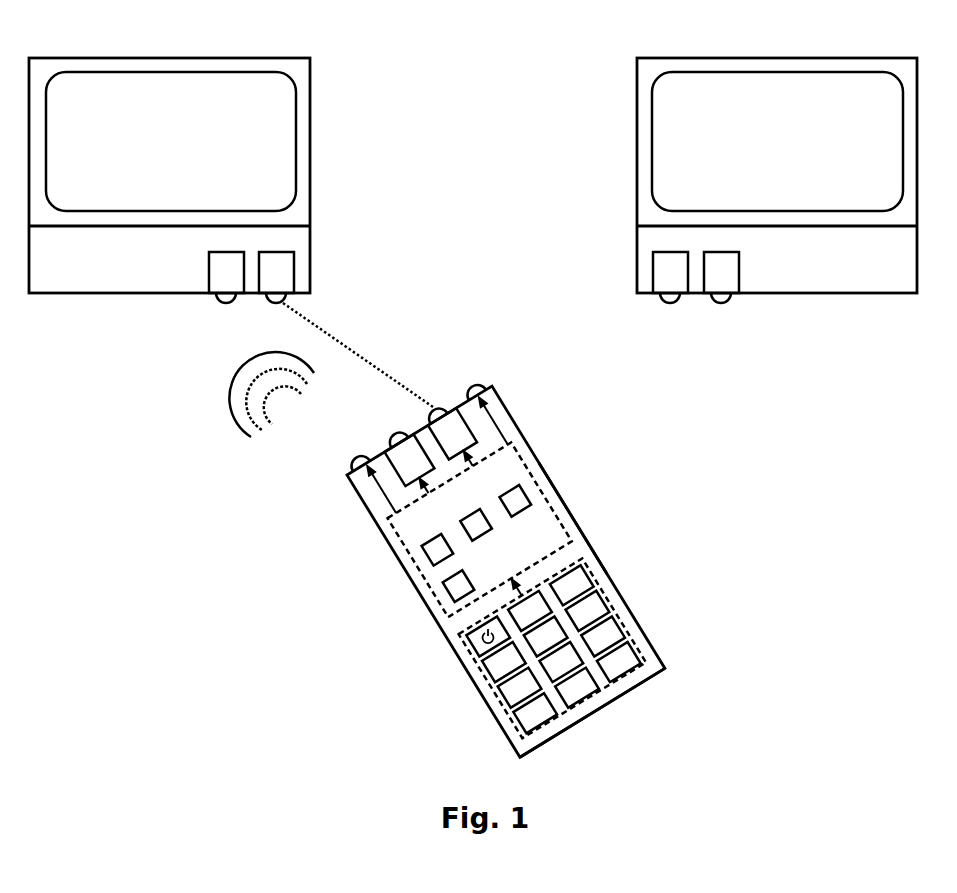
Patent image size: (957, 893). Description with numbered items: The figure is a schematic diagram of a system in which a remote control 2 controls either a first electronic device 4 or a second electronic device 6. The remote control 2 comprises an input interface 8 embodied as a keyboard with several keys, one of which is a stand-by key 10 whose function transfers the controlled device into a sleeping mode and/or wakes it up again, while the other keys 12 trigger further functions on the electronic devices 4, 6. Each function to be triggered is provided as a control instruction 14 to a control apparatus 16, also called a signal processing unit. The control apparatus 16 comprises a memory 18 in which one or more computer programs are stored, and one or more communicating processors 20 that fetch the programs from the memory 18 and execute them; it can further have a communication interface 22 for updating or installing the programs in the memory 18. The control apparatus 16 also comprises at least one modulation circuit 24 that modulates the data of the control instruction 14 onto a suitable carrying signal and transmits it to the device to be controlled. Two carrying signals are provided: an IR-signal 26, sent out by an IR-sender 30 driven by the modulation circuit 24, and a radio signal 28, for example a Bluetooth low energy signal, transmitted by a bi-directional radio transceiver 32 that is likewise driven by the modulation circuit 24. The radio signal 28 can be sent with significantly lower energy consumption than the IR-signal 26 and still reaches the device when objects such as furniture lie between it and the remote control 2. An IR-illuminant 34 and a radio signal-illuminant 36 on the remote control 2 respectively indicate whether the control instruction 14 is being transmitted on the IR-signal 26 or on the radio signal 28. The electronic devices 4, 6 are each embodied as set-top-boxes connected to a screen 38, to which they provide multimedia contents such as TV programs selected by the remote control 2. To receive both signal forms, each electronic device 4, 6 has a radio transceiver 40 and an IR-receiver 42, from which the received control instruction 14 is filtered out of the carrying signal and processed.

The remote control 2 is at (509, 403).
The first electronic device 4 is at (57, 294).
The second electronic device 6 is at (890, 294).
The input interface 8 is at (546, 740).
The stand-by key 10 is at (465, 637).
The keys 12 is at (573, 580).
The control instruction 14 is at (352, 305).
The control apparatus 16 is at (574, 520).
The memory 18 is at (436, 553).
The processors 20 is at (468, 523).
The communication interface 22 is at (456, 590).
The modulation circuit 24 is at (544, 472).
The IR-signal 26 is at (361, 355).
The radio signal 28 is at (257, 422).
The IR-sender 30 is at (452, 405).
The radio transceiver 32 is at (388, 452).
The IR-illuminant 34 is at (474, 393).
The radio signal-illuminant 36 is at (351, 460).
The screen 38 is at (165, 58).
The radio transceiver 40 is at (213, 293).
The IR-receiver 42 is at (263, 293).